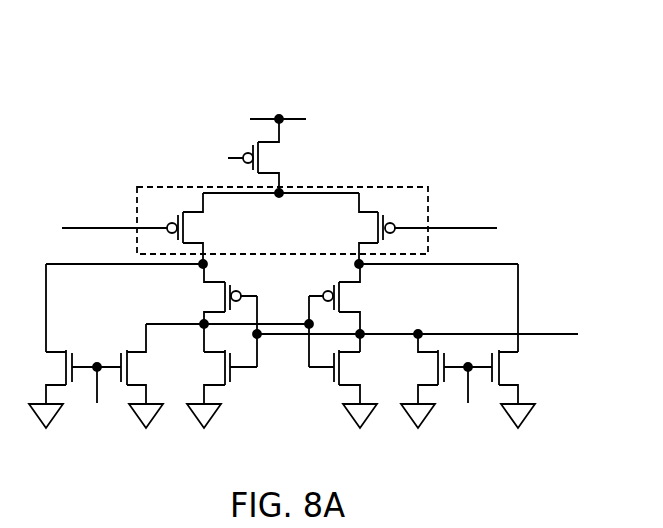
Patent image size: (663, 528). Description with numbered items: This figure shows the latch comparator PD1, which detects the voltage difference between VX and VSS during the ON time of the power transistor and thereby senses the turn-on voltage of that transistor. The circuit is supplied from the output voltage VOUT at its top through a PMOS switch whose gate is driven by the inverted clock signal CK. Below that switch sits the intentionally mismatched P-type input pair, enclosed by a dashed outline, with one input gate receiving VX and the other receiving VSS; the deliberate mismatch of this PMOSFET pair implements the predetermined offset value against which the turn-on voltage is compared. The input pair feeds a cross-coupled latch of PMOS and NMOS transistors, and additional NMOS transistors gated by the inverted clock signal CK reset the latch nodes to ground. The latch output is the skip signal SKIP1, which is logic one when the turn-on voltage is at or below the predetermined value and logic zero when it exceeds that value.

The latch comparator PD1 is at (114, 80).
The output voltage VOUT is at (278, 107).
The clock signal CK is at (204, 142).
The switching node voltage VX is at (100, 229).
The ground supply voltage VSS is at (461, 228).
The skip signal SKIP1 is at (629, 318).